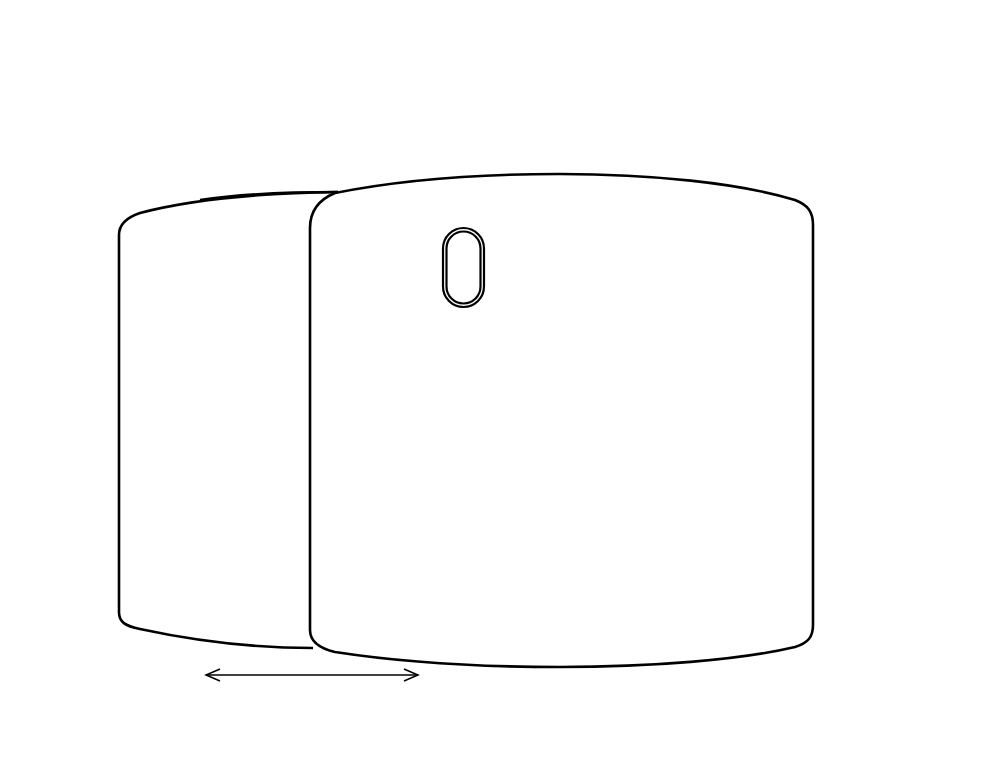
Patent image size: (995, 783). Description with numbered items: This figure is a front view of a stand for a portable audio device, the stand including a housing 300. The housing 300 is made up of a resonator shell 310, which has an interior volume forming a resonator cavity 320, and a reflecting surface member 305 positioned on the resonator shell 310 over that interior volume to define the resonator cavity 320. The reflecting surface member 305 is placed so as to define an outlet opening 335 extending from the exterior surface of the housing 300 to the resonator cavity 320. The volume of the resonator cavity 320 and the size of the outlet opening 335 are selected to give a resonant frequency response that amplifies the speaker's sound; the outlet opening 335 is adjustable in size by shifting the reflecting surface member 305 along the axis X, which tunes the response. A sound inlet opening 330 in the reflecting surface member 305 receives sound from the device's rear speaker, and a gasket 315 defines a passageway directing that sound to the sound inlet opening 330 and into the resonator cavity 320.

The housing 300 is at (570, 104).
The reflecting surface member 305 is at (814, 238).
The resonator shell 310 is at (118, 421).
The gasket 315 is at (485, 268).
The resonator cavity 320 is at (185, 275).
The sound inlet opening 330 is at (463, 254).
The outlet opening 335 is at (252, 197).